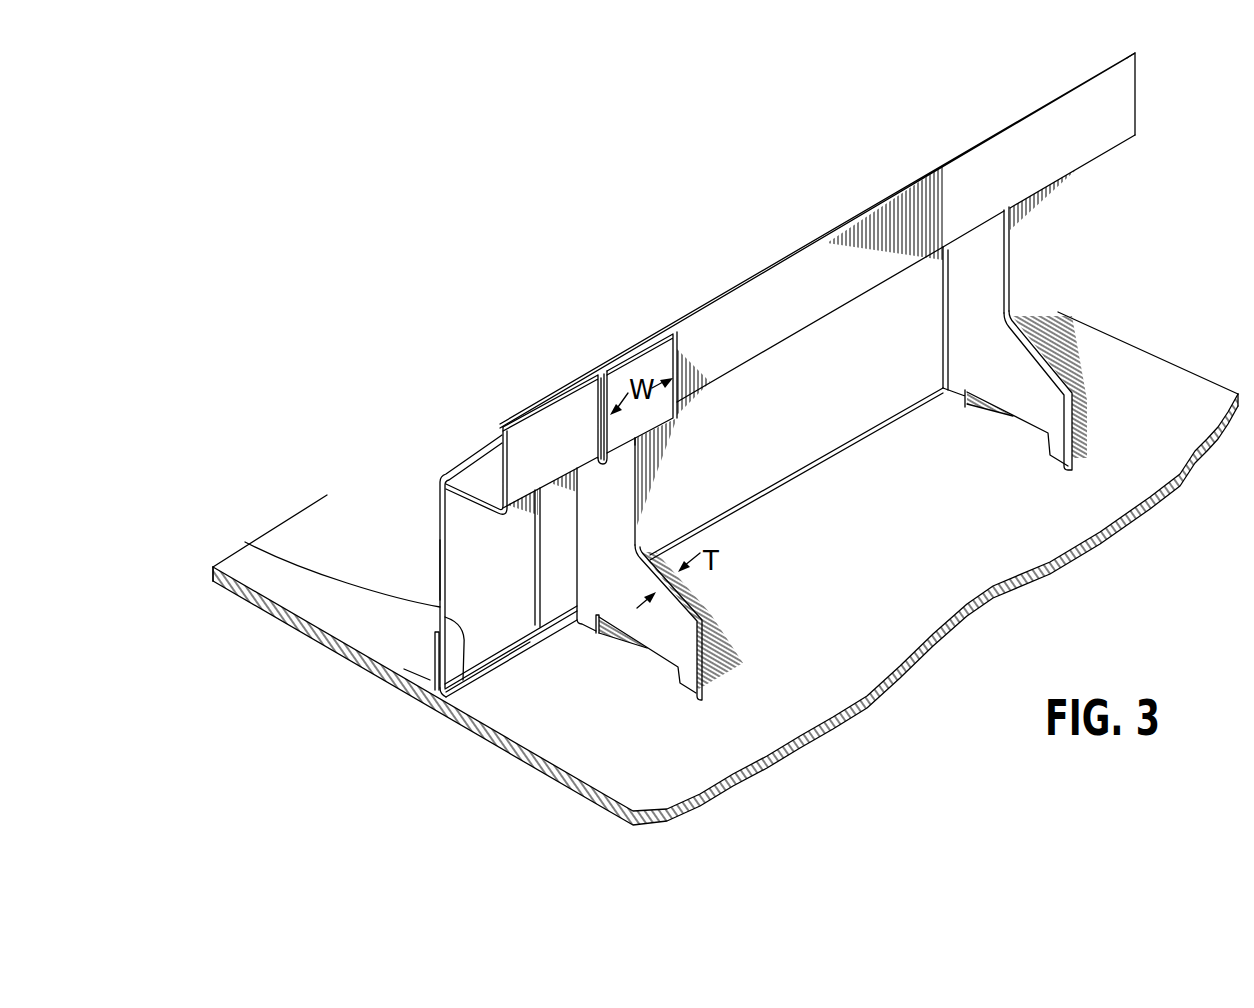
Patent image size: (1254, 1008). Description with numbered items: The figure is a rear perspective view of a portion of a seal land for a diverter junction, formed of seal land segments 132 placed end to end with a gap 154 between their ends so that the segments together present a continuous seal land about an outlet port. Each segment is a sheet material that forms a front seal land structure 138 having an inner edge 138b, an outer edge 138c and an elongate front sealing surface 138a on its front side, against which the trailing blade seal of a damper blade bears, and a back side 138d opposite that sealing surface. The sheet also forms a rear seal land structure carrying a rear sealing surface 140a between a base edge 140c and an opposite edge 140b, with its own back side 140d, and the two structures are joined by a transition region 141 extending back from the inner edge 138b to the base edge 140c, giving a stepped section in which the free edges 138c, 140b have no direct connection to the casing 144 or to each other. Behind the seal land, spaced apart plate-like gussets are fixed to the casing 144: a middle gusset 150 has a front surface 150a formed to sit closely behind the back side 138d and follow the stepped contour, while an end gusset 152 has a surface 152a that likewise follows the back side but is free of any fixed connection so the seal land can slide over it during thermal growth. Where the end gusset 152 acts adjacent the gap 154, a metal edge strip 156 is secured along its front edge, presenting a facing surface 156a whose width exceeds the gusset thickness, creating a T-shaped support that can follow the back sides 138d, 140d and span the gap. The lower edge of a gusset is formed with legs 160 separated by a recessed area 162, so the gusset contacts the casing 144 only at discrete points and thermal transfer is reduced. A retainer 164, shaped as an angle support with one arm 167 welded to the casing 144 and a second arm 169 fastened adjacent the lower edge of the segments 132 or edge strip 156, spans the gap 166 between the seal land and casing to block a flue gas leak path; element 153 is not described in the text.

The seal land segment 132 is at (722, 283).
The front seal land structure 138 is at (452, 509).
The front sealing surface 138a is at (437, 533).
The inner edge 138b is at (497, 507).
The outer edge 138c is at (437, 593).
The back side 138d is at (837, 357).
The rear sealing surface 140a is at (640, 347).
The opposite edge 140b is at (790, 256).
The base edge 140c is at (443, 476).
The back side of rear seal land structure 140d is at (800, 290).
The transition region 141 is at (473, 480).
The casing 144 is at (680, 763).
The middle gusset 150 is at (1062, 352).
The surface of middle gusset 150a is at (1043, 253).
The end gusset 152 is at (690, 683).
The surface of end gusset 152a is at (592, 616).
The upper post portion 153 is at (950, 263).
The gap 154 is at (630, 346).
The edge strip 156 is at (533, 627).
The facing surface 156a is at (213, 567).
The legs 160 is at (577, 588).
The recessed area 162 is at (630, 640).
The retainer 164 is at (392, 669).
The gap 166 is at (457, 675).
The arm 167 is at (433, 690).
The second arm 169 is at (434, 645).